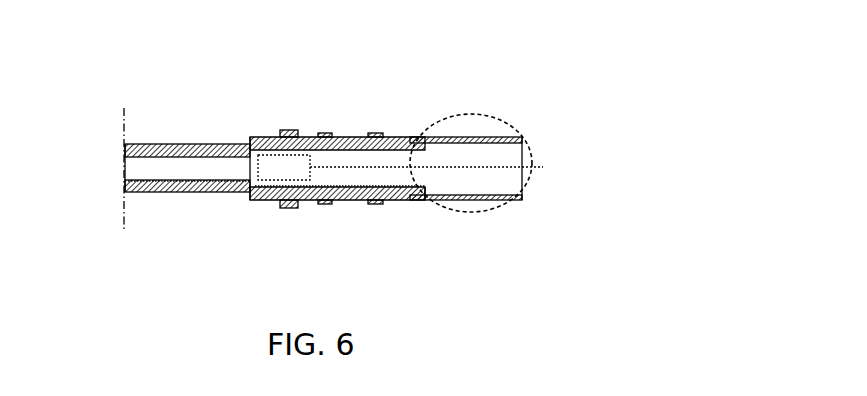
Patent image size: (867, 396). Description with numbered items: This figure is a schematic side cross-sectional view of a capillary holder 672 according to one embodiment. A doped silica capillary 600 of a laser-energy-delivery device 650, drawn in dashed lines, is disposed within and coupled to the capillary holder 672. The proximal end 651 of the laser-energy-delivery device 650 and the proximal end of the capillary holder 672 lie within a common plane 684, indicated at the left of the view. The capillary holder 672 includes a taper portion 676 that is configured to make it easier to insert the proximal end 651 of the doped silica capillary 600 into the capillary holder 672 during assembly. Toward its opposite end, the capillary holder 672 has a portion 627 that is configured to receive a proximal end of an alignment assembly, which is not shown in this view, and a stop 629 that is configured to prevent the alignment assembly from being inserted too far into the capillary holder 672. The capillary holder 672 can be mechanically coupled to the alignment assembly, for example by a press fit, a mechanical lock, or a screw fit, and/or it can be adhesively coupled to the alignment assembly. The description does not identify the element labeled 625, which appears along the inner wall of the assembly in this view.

The doped silica capillary 600 is at (289, 160).
The sheath 625 is at (338, 183).
The portion 627 is at (514, 206).
The stop 629 is at (431, 195).
The laser-energy-delivery device 650 is at (382, 171).
The proximal end 651 is at (131, 168).
The capillary holder 672 is at (472, 100).
The taper portion 676 is at (250, 140).
The plane 684 is at (122, 118).